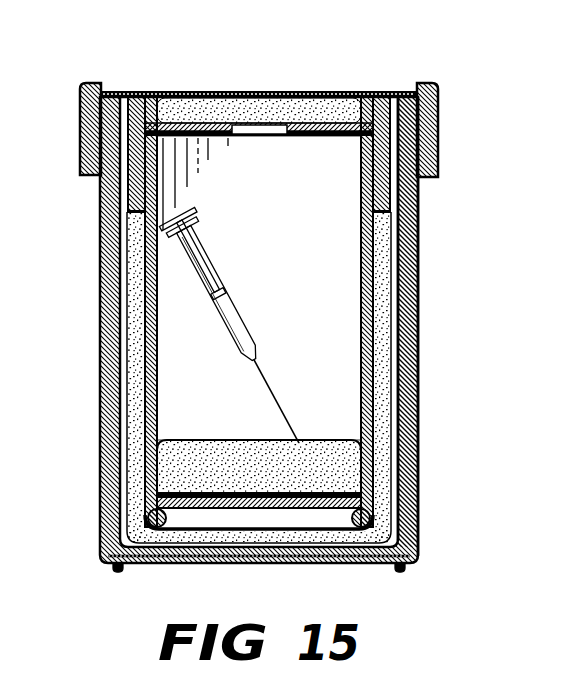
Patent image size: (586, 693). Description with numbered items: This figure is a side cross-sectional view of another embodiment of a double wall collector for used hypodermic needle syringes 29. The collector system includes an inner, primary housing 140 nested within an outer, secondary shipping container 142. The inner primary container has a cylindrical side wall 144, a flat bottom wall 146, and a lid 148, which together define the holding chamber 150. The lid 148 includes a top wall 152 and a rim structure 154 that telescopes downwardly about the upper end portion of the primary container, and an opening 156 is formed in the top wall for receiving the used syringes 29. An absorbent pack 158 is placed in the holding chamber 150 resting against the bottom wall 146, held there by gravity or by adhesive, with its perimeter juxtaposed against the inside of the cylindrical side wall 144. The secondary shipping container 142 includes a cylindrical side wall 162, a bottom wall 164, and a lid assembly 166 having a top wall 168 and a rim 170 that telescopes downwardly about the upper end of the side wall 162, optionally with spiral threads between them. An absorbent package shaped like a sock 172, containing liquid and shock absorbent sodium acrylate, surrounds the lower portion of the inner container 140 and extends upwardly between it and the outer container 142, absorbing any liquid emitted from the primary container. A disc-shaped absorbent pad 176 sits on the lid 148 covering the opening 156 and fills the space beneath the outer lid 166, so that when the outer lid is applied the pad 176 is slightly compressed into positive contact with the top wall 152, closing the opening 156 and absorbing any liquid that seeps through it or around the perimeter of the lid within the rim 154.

The used hypodermic needle syringes 29 is at (243, 328).
The inner primary housing 140 is at (338, 282).
The outer secondary shipping container 142 is at (418, 308).
The cylindrical side wall 144 is at (158, 308).
The flat bottom wall 146 is at (307, 483).
The lid 148 is at (310, 138).
The holding chamber 150 is at (282, 272).
The top wall 152 is at (200, 140).
The rim structure 154 is at (364, 184).
The opening 156 is at (270, 90).
The absorbent pad 158 is at (218, 447).
The cylindrical side wall 162 is at (412, 410).
The bottom wall 164 is at (280, 562).
The lid assembly 166 is at (362, 90).
The top wall 168 is at (128, 90).
The rim 170 is at (92, 125).
The absorbent sock 172 is at (382, 362).
The disc-shaped absorbent pad 176 is at (202, 90).